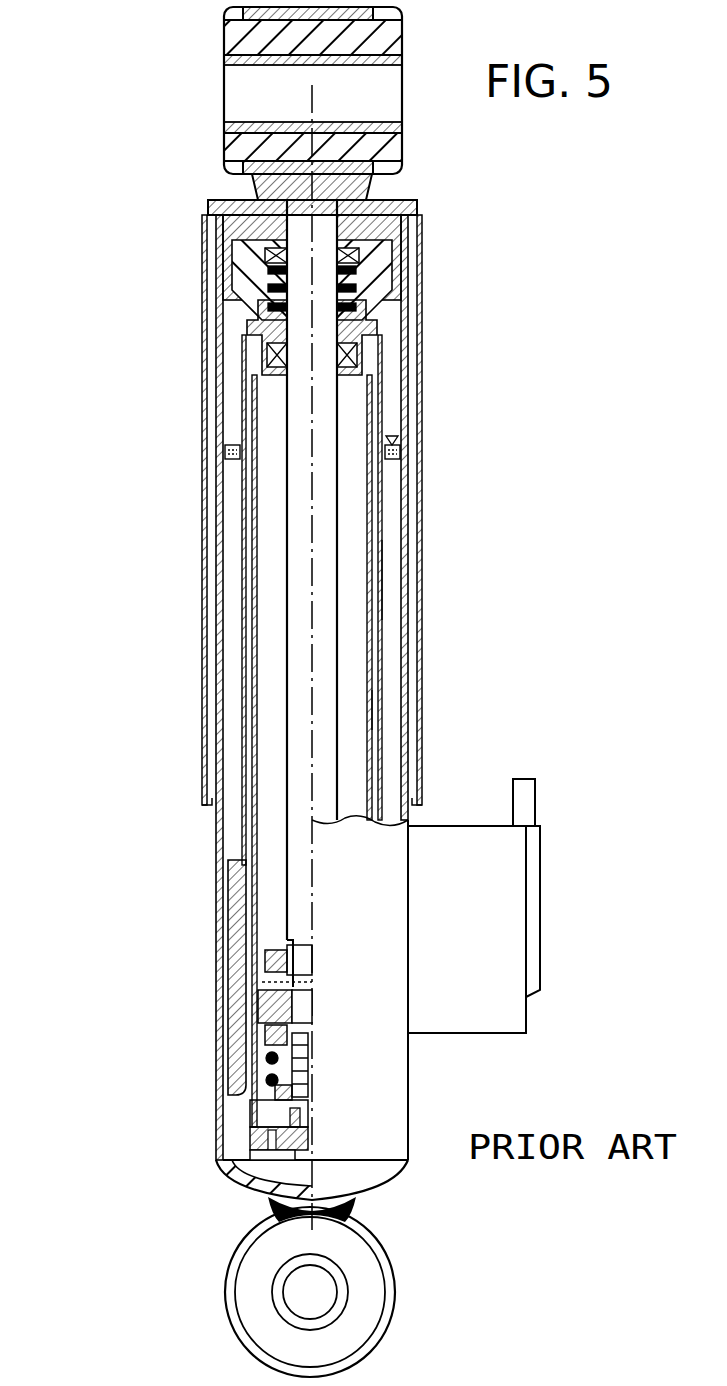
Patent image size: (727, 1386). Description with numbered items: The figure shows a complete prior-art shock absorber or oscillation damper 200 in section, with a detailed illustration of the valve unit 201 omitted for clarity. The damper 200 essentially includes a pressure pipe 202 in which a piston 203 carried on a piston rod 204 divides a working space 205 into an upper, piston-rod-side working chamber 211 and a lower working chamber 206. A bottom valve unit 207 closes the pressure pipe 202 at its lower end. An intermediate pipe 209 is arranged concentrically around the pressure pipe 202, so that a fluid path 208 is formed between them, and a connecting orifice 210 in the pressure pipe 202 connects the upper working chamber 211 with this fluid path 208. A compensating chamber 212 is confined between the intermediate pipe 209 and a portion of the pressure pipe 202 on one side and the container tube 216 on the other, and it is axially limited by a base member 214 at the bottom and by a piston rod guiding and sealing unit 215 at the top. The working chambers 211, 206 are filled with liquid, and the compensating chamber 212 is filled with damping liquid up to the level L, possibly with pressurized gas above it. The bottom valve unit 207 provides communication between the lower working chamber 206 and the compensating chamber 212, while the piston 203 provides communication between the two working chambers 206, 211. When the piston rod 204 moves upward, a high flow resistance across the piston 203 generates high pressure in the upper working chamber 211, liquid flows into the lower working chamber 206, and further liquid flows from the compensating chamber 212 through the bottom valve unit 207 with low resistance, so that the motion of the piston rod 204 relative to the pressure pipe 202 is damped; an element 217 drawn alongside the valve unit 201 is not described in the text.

The oscillation damper 200 is at (170, 680).
The valve unit 201 is at (477, 822).
The pressure pipe 202 is at (380, 618).
The piston 203 is at (257, 1033).
The piston rod 204 is at (330, 502).
The working space 205 is at (263, 480).
The lower working chamber 206 is at (262, 1107).
The bottom valve unit 207 is at (248, 1143).
The fluid path 208 is at (380, 657).
The intermediate pipe 209 is at (380, 712).
The connecting orifice 210 is at (385, 413).
The upper working chamber 211 is at (263, 587).
The compensating chamber 212 is at (392, 583).
The base member 214 is at (220, 1162).
The piston rod guiding and sealing unit 215 is at (385, 308).
The container tube 216 is at (405, 547).
The mounting plate 217 is at (485, 1035).
The level L is at (235, 445).